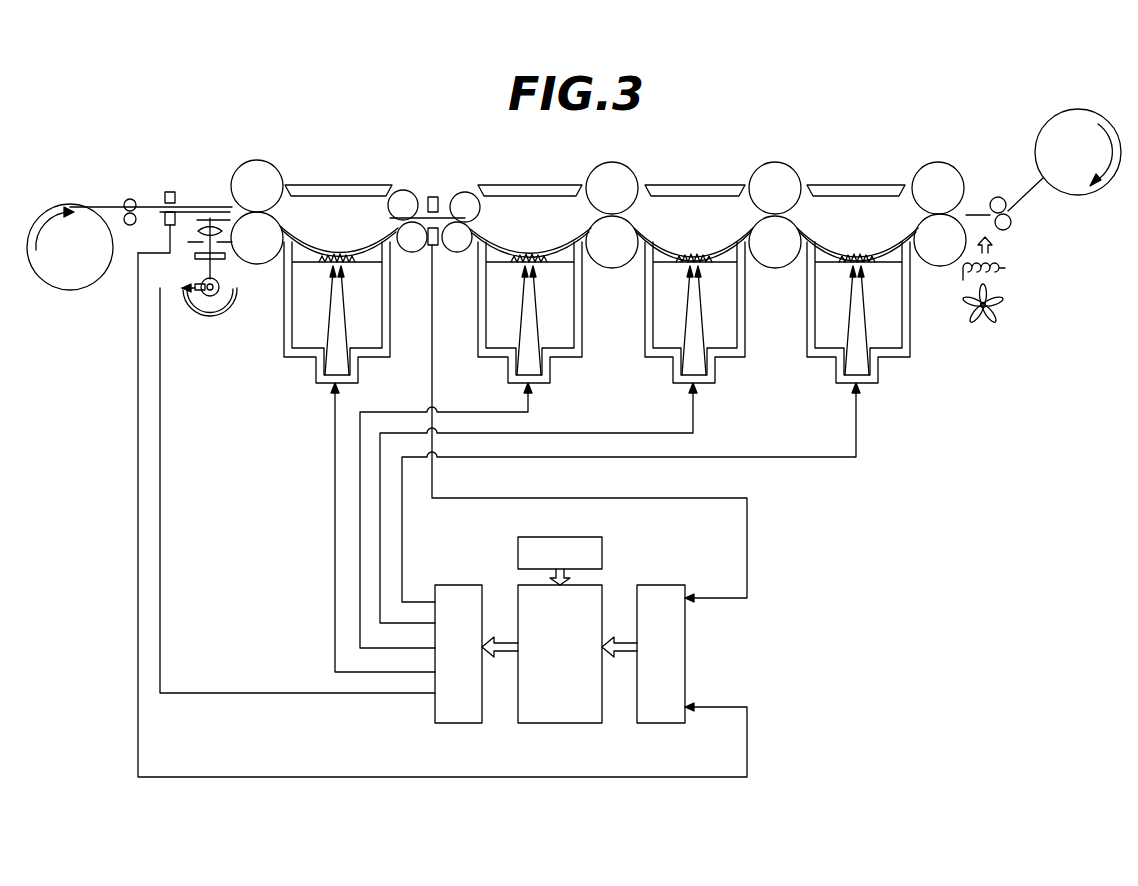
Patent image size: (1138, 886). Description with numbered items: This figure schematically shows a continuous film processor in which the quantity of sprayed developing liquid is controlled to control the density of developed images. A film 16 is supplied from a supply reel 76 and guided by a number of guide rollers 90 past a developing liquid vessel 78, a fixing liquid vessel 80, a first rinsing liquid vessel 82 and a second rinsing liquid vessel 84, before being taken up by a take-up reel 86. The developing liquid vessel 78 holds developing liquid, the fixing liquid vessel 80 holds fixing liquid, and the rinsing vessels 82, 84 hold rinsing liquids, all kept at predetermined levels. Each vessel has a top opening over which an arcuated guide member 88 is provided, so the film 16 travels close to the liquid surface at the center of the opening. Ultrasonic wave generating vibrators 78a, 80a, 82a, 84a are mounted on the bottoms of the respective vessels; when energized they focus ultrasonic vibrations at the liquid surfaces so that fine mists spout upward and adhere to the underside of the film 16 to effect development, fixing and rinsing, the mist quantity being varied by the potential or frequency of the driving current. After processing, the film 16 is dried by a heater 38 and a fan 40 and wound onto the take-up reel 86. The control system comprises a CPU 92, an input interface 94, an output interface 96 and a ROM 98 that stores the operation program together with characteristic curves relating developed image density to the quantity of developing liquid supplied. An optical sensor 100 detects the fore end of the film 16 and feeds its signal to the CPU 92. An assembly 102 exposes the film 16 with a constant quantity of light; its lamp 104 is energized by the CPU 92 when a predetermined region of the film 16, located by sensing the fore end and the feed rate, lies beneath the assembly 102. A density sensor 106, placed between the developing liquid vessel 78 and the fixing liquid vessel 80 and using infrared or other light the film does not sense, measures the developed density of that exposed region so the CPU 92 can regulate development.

The film 16 is at (1028, 198).
The heater 38 is at (1007, 268).
The fan 40 is at (995, 305).
The supply reel 76 is at (80, 205).
The developing liquid vessel 78 is at (290, 356).
The ultrasonic wave generating vibrator 78a is at (318, 384).
The fixing liquid vessel 80 is at (488, 359).
The ultrasonic wave generating vibrator 80a is at (543, 383).
The first rinsing liquid vessel 82 is at (665, 360).
The ultrasonic wave generating vibrator 82a is at (712, 385).
The second rinsing liquid vessel 84 is at (822, 360).
The ultrasonic wave generating vibrator 84a is at (878, 385).
The take-up reel 86 is at (1055, 130).
The arcuated guide member 88 is at (316, 246).
The guide rollers 90 is at (262, 160).
The CPU 92 is at (570, 724).
The input interface 94 is at (666, 724).
The output interface 96 is at (462, 724).
The ROM 98 is at (603, 553).
The optical sensor 100 is at (166, 197).
The assembly 102 is at (195, 322).
The lamp 104 is at (215, 298).
The density sensor 106 is at (440, 228).